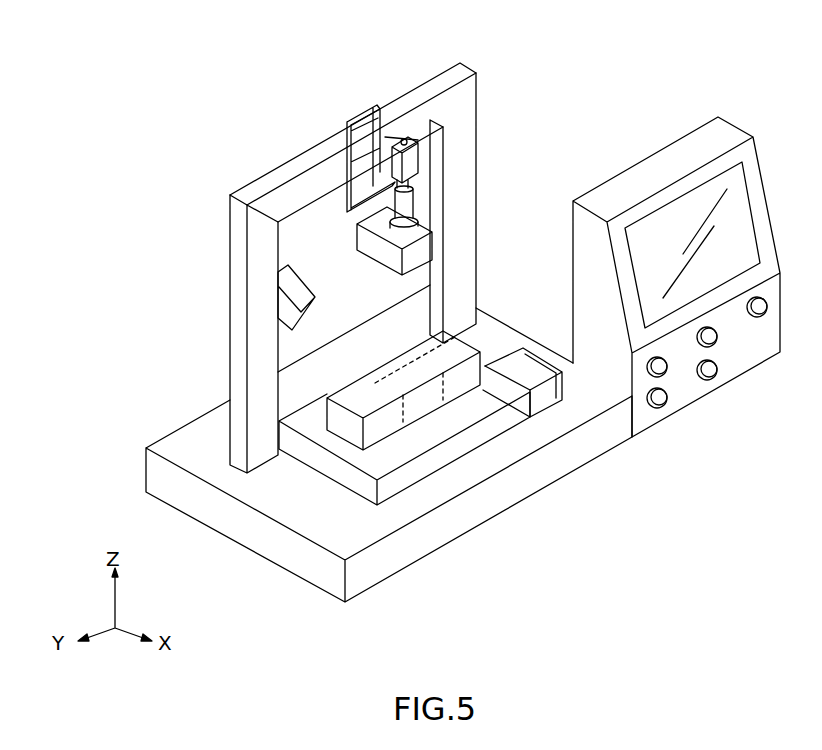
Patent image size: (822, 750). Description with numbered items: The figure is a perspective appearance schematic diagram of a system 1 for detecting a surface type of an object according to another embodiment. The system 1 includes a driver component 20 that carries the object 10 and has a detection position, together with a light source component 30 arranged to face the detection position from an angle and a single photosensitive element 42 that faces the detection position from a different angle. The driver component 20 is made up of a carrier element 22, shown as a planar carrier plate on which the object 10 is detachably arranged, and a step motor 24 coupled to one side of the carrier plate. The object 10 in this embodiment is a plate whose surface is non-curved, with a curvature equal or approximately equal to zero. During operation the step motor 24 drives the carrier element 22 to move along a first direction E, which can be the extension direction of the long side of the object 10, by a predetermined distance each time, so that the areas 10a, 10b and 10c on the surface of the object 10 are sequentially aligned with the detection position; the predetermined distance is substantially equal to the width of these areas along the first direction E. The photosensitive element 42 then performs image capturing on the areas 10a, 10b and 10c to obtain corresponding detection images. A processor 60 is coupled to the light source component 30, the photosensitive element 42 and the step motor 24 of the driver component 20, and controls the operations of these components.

The system for detecting a surface type of an object 1 is at (96, 72).
The object 10 is at (433, 473).
The area 10a is at (378, 410).
The area 10b is at (419, 388).
The area 10c is at (463, 363).
The first direction E is at (458, 338).
The driver component 20 is at (448, 461).
The carrier element 22 is at (517, 408).
The step motor 24 is at (550, 388).
The light source component 30 is at (288, 305).
The photosensitive element 42 is at (412, 162).
The processor 60 is at (680, 387).